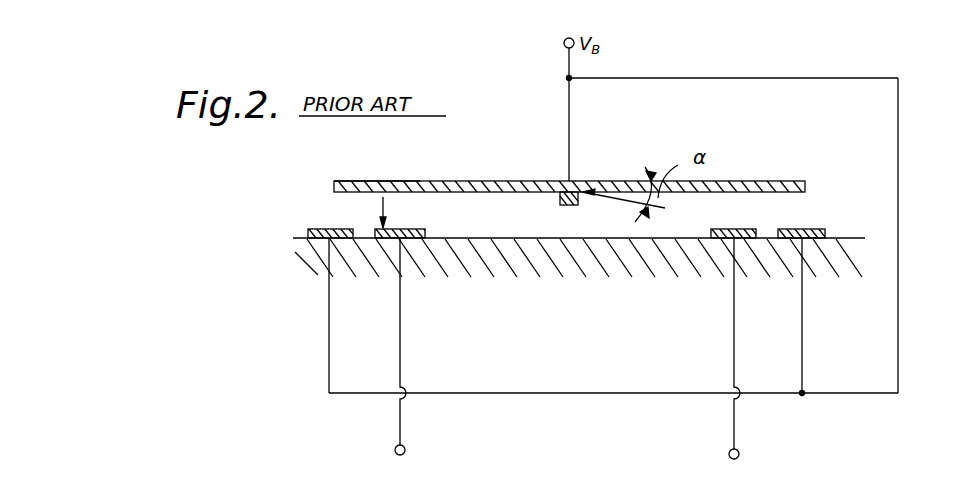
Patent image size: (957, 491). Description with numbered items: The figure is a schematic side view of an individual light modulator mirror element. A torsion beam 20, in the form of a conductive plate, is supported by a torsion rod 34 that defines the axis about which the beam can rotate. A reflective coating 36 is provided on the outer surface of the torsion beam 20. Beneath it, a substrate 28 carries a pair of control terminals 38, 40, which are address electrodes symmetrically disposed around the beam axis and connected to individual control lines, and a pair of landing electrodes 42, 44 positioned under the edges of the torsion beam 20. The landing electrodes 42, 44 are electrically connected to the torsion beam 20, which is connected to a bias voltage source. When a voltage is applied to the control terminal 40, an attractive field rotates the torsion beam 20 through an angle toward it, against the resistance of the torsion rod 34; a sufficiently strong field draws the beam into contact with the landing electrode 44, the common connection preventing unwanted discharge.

The torsion beam 20 is at (794, 180).
The reflective coating 36 is at (360, 150).
The torsion rod 34 is at (560, 204).
The substrate 28 is at (307, 259).
The landing electrode 42 is at (313, 229).
The control terminal 38 is at (417, 229).
The control terminal 40 is at (752, 215).
The landing electrode 44 is at (822, 229).